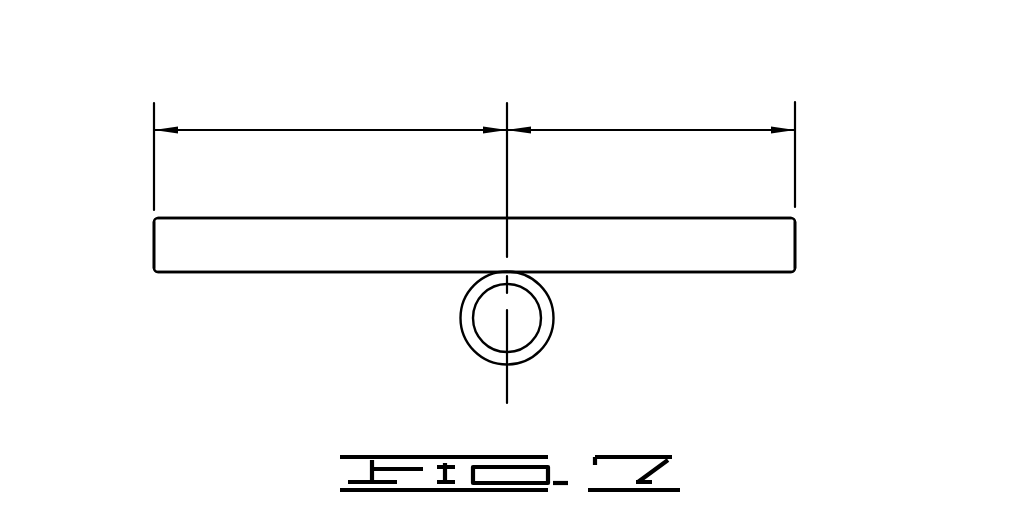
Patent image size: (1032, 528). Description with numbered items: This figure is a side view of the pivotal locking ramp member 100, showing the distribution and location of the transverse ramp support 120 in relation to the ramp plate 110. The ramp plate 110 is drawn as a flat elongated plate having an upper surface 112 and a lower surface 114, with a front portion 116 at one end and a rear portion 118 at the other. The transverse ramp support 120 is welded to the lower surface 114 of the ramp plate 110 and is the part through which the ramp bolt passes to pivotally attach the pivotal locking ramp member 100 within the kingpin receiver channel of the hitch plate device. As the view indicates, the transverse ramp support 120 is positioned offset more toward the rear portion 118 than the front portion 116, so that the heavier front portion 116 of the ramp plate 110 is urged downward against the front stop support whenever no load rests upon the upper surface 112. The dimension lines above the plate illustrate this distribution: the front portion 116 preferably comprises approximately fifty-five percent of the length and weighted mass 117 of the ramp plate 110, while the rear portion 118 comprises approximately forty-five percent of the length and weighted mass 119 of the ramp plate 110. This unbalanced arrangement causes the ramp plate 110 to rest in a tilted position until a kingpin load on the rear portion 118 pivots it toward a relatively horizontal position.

The pivotal locking ramp member 100 is at (132, 203).
The ramp plate 110 is at (796, 242).
The upper surface 112 is at (582, 218).
The lower surface 114 is at (394, 273).
The front portion 116 is at (253, 252).
The rear portion 118 is at (653, 248).
The transverse ramp support 120 is at (539, 351).
The weighted mass of the front portion 117 is at (352, 131).
The weighted mass of the rear portion 119 is at (689, 131).